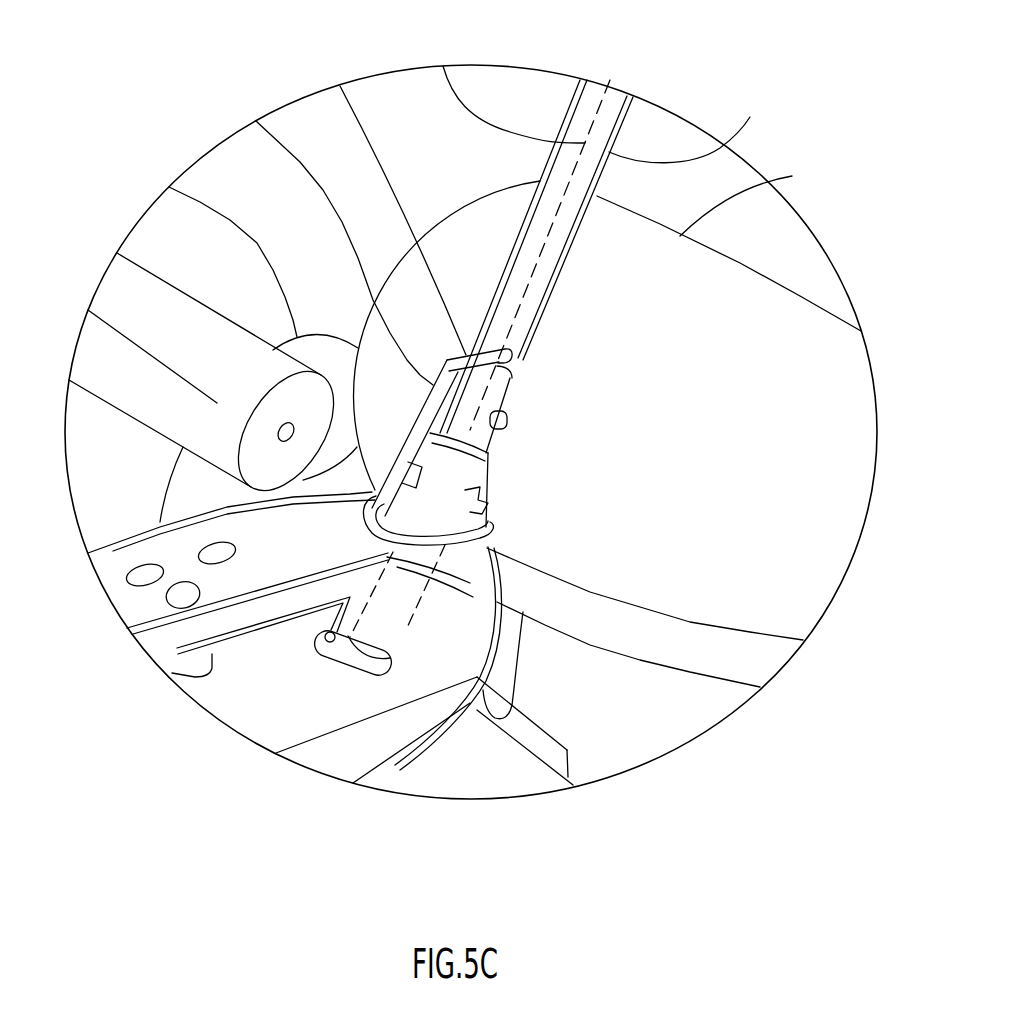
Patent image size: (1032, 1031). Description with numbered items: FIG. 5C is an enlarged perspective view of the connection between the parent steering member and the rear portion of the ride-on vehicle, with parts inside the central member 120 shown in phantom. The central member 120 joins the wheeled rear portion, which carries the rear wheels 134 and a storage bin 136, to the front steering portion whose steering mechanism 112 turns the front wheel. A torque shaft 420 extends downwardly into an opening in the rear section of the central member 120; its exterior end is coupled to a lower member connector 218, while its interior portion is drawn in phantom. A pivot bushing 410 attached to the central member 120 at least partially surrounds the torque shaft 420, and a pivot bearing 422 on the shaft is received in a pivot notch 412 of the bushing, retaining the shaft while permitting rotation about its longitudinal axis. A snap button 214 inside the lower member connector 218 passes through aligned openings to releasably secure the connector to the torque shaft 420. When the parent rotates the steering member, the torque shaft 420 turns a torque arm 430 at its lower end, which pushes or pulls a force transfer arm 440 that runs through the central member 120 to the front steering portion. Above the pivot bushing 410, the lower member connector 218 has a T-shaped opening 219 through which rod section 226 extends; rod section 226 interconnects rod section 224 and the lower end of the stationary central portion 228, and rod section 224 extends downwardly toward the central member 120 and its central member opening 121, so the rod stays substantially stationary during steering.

The steering mechanism 112 is at (183, 349).
The central member 120 is at (126, 548).
The central member opening 121 is at (402, 545).
The rear wheels 134 is at (169, 187).
The storage bin 136 is at (792, 176).
The snap button 214 is at (508, 425).
The lower member connector 218 is at (750, 117).
The T-shaped opening 219 is at (507, 347).
The rod section 224 is at (256, 121).
The rod section 226 is at (340, 86).
The central portion 228 is at (443, 66).
The pivot bushing 410 is at (492, 531).
The pivot notch 412 is at (487, 488).
The torque shaft 420 is at (500, 407).
The pivot bearing 422 is at (466, 500).
The torque arm 430 is at (333, 670).
The force transfer arm 440 is at (172, 673).